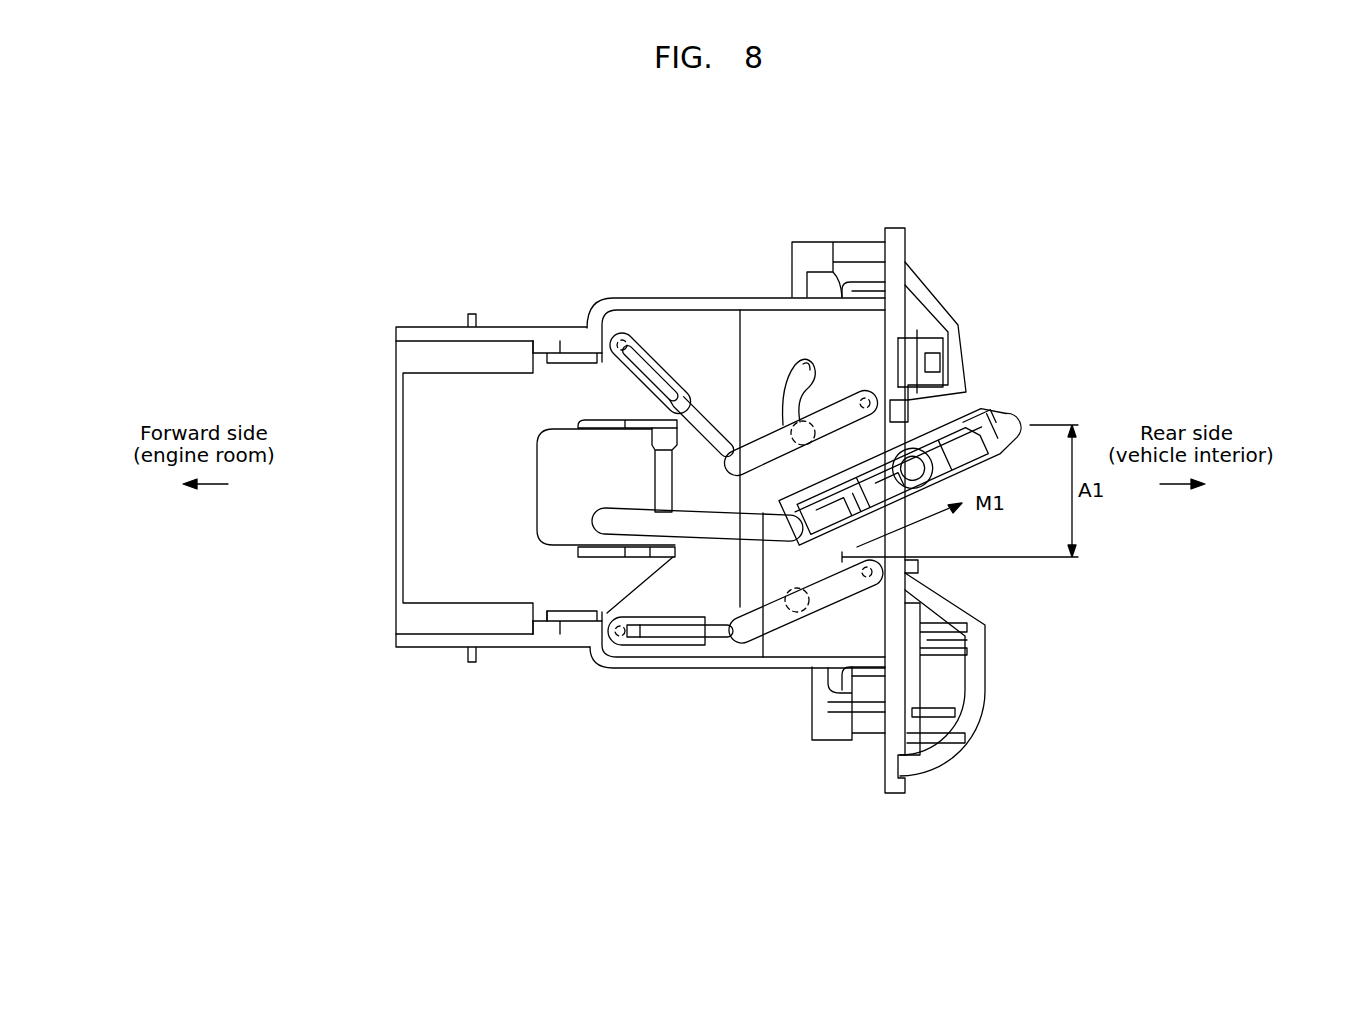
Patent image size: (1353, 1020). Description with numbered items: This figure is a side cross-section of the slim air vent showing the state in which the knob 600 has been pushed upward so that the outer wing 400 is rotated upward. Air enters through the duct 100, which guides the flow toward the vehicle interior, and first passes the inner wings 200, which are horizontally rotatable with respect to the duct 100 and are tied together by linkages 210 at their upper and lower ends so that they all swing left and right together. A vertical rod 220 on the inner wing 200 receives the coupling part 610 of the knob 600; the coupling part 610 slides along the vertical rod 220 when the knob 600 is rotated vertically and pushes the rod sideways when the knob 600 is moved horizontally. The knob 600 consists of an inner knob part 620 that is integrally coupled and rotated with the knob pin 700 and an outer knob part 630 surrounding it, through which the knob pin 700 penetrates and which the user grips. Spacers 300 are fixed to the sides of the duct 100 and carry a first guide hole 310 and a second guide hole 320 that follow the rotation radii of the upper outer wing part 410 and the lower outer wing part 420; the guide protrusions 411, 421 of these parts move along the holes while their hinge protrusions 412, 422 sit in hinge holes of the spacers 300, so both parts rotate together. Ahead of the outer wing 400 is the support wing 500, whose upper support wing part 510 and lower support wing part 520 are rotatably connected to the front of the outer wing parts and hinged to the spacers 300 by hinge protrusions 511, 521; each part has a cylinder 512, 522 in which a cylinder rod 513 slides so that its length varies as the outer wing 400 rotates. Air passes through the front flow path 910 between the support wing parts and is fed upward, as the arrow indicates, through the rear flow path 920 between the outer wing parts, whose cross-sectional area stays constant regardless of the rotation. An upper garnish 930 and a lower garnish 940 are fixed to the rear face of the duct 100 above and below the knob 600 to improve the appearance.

The duct 100 is at (423, 326).
The inner wing 200 is at (455, 548).
The linkage 210 is at (558, 340).
The vertical rod 220 is at (667, 460).
The spacer 300 is at (752, 355).
The first guide hole 310 is at (792, 352).
The second guide hole 320 is at (745, 637).
The outer wing 400 is at (826, 617).
The upper outer wing part 410 is at (902, 352).
The guide protrusion 411 is at (843, 425).
The hinge protrusion 412 is at (955, 370).
The lower outer wing part 420 is at (923, 648).
The guide protrusion 421 is at (797, 605).
The hinge protrusion 422 is at (920, 600).
The support wing 500 is at (665, 312).
The upper support wing part 510 is at (677, 312).
The hinge protrusion 511 is at (622, 345).
The cylinder 512 is at (650, 373).
The cylinder rod 513 is at (702, 425).
The lower support wing part 520 is at (646, 710).
The hinge protrusion 521 is at (620, 631).
The cylinder 522 is at (680, 631).
The knob 600 is at (1010, 425).
The coupling part 610 is at (630, 510).
The inner knob part 620 is at (795, 538).
The outer knob part 630 is at (903, 470).
The knob pin 700 is at (957, 444).
The front flow path 910 is at (647, 595).
The rear flow path 920 is at (905, 577).
The upper garnish 930 is at (935, 300).
The lower garnish 940 is at (975, 705).